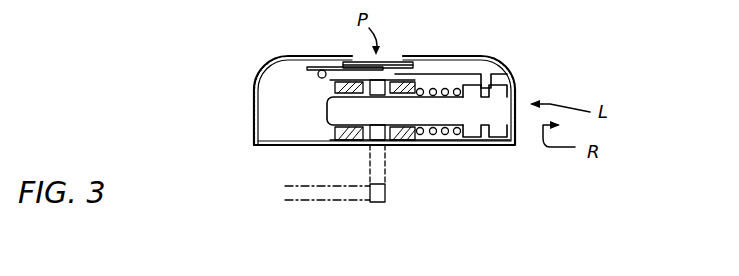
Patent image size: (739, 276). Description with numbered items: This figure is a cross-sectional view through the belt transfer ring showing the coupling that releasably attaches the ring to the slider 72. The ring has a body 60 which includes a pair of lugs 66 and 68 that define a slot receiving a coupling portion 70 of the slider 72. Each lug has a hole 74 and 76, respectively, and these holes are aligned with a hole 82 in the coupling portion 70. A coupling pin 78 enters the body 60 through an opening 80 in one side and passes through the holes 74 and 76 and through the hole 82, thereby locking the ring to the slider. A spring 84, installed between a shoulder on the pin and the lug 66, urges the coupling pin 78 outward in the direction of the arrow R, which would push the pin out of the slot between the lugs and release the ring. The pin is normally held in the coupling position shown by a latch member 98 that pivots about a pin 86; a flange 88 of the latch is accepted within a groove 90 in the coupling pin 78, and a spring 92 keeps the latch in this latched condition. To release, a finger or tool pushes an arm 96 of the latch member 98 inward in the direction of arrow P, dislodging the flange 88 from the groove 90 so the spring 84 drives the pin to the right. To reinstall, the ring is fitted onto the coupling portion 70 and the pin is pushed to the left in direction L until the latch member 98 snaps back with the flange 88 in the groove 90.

The body 60 is at (252, 102).
The lug 66 is at (416, 146).
The lug 68 is at (334, 144).
The coupling portion 70 is at (377, 184).
The slider 72 is at (298, 198).
The hole 74 is at (417, 111).
The hole 76 is at (334, 123).
The coupling pin 78 is at (517, 131).
The opening 80 is at (517, 90).
The hole 82 is at (396, 146).
The spring 84 is at (448, 147).
The pin 86 is at (428, 57).
The flange 88 is at (504, 68).
The groove 90 is at (490, 144).
The spring 92 is at (316, 70).
The arm 96 is at (382, 58).
The latch member 98 is at (468, 56).